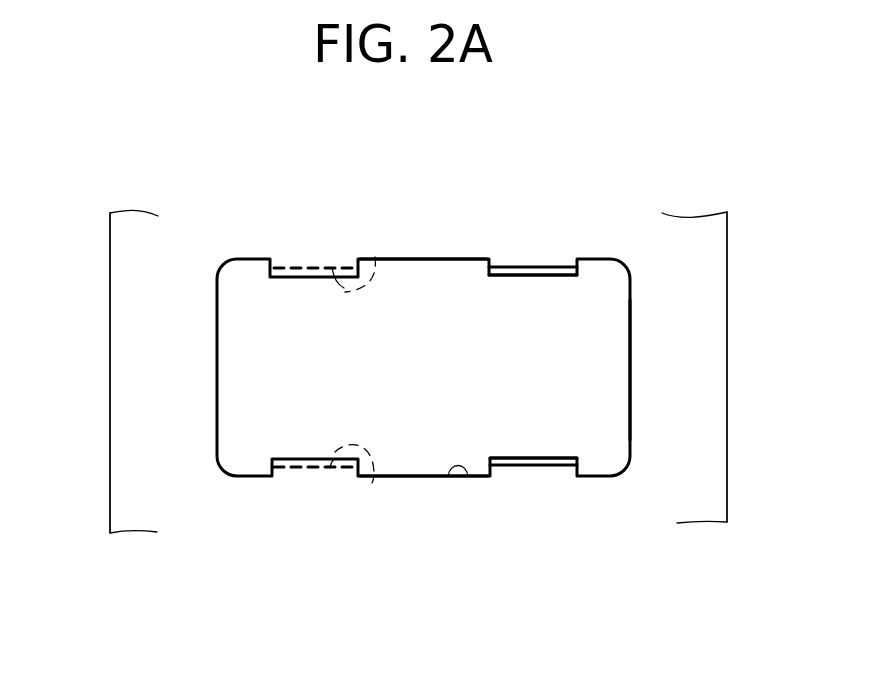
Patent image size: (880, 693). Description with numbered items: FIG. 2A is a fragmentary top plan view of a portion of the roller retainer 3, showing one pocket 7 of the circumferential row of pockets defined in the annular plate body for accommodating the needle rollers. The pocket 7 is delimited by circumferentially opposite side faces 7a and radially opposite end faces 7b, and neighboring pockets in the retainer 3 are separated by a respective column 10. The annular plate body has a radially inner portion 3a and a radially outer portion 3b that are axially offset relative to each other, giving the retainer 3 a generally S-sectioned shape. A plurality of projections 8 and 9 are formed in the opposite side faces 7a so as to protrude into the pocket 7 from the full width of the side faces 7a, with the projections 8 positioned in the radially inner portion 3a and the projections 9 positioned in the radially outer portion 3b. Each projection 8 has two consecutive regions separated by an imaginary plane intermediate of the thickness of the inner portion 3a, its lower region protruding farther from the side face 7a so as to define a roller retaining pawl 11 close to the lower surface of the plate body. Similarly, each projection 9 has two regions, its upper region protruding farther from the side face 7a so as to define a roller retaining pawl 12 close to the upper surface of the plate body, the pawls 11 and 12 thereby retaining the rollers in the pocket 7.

The roller retainer 3 is at (695, 263).
The radially inner portion 3a is at (692, 497).
The radially outer portion 3b is at (152, 497).
The pocket 7 is at (247, 322).
The side face 7a is at (468, 477).
The end face 7b is at (630, 373).
The projection 8 is at (556, 262).
The projection 9 is at (375, 257).
The column 10 is at (428, 240).
The roller retaining pawl 11 is at (513, 263).
The roller retaining pawl 12 is at (297, 278).